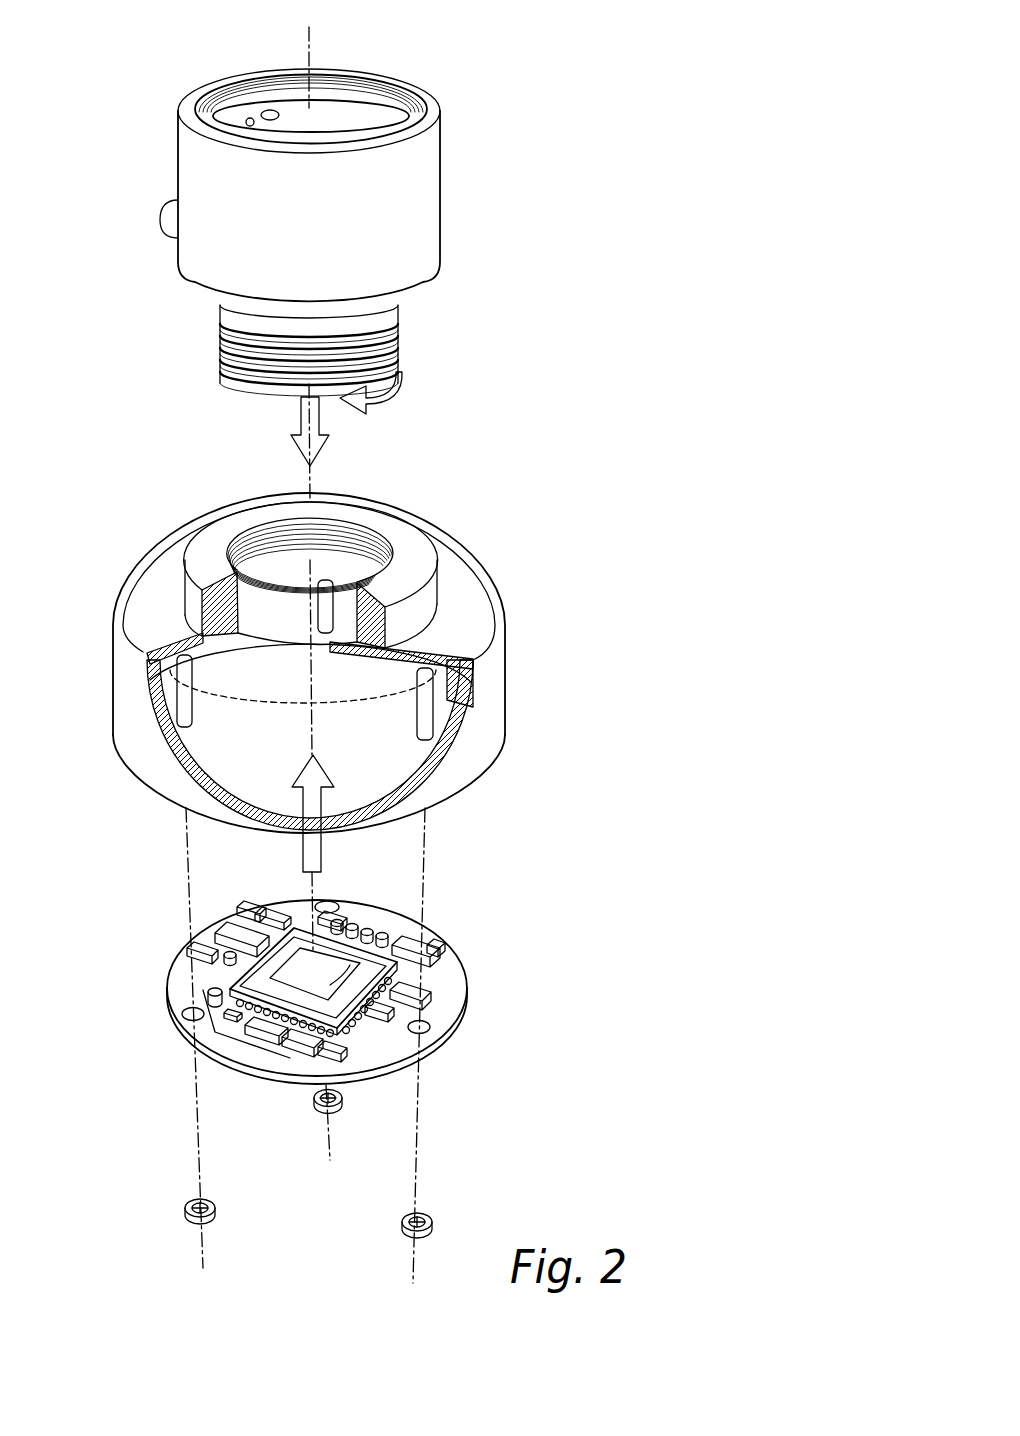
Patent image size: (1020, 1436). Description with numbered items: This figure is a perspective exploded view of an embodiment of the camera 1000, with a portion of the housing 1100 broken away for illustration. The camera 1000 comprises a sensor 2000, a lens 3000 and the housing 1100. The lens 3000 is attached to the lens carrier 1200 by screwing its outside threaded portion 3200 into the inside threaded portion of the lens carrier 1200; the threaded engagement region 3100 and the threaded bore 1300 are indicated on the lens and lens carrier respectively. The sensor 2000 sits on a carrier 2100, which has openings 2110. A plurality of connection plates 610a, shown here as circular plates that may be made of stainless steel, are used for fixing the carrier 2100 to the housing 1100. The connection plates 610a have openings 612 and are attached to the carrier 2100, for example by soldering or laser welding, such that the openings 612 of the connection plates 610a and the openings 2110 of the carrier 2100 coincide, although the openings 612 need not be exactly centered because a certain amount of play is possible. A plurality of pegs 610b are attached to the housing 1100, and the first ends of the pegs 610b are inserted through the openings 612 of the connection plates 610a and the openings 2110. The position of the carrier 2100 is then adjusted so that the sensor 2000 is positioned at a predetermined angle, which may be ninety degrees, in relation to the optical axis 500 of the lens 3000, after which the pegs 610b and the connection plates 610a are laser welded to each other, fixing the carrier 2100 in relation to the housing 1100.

The lens 3000 is at (415, 206).
The lens thread 3100 is at (440, 313).
The outside threaded portion 3200 is at (397, 350).
The optical axis 500 is at (310, 478).
The camera 1000 is at (380, 859).
The housing 1100 is at (497, 680).
The lens carrier 1200 is at (425, 600).
The threaded bore 1300 is at (362, 550).
The pegs 610b is at (430, 720).
The carrier 2100 is at (455, 1000).
The sensor 2000 is at (430, 975).
The openings 2110 is at (181, 1020).
The openings 612 is at (420, 1217).
The connection plates 610a is at (198, 1213).